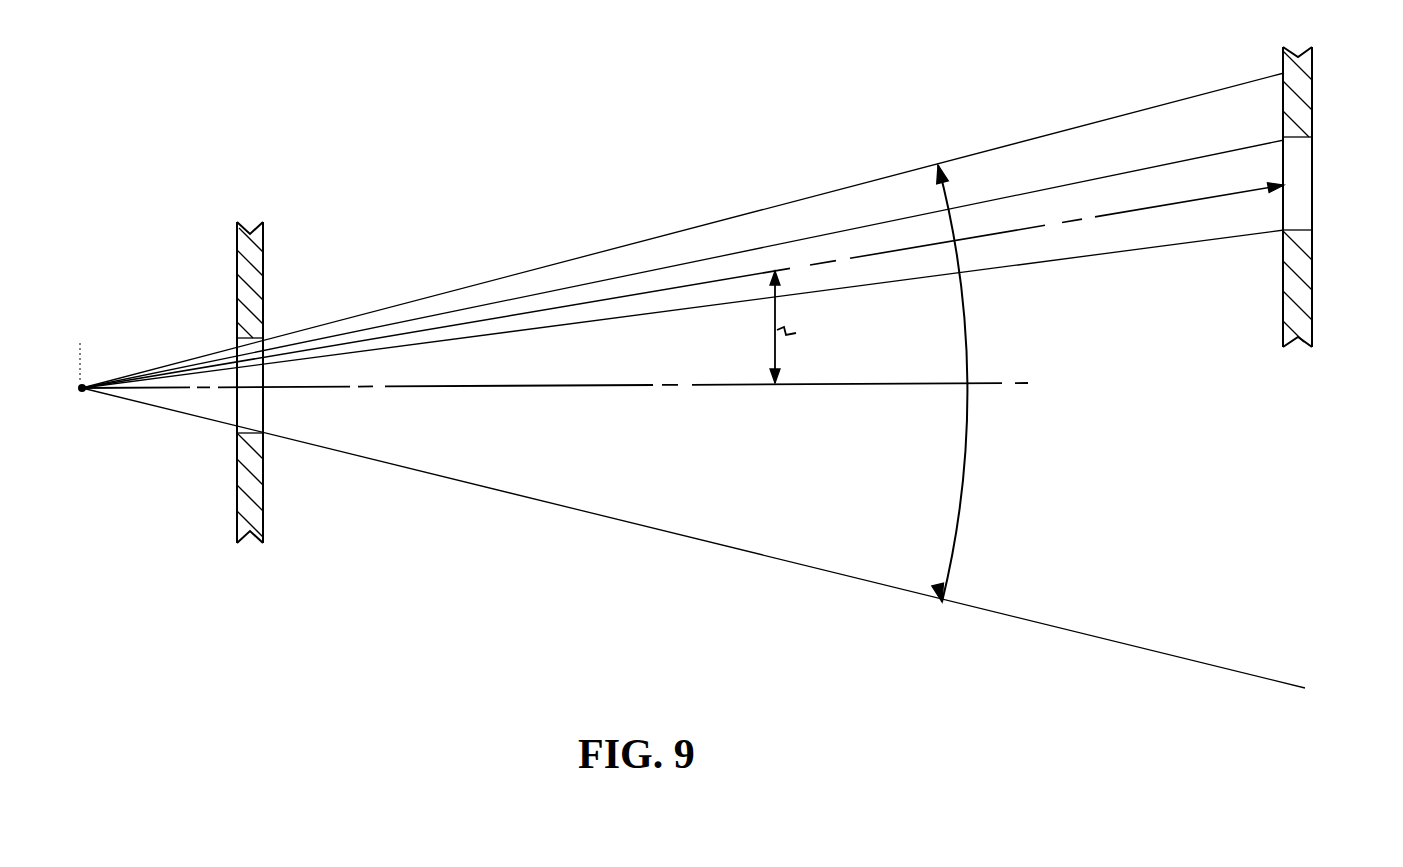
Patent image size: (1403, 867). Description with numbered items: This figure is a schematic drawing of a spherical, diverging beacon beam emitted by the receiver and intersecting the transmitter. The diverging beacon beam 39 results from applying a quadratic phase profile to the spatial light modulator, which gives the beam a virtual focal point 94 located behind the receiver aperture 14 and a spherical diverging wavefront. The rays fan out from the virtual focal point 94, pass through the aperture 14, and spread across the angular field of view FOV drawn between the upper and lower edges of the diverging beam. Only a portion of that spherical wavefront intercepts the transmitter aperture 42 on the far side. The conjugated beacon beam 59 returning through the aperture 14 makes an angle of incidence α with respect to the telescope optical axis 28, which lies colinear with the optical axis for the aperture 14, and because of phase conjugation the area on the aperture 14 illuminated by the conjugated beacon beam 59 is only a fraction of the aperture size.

The virtual focal point 94 is at (84, 384).
The aperture 14 is at (247, 413).
The transmitter aperture 42 is at (1300, 196).
The beacon beam 59 is at (1184, 246).
The telescope optical axis 28 is at (757, 385).
The field of view FOV is at (968, 490).
The diverging beacon beam 39 is at (1247, 674).